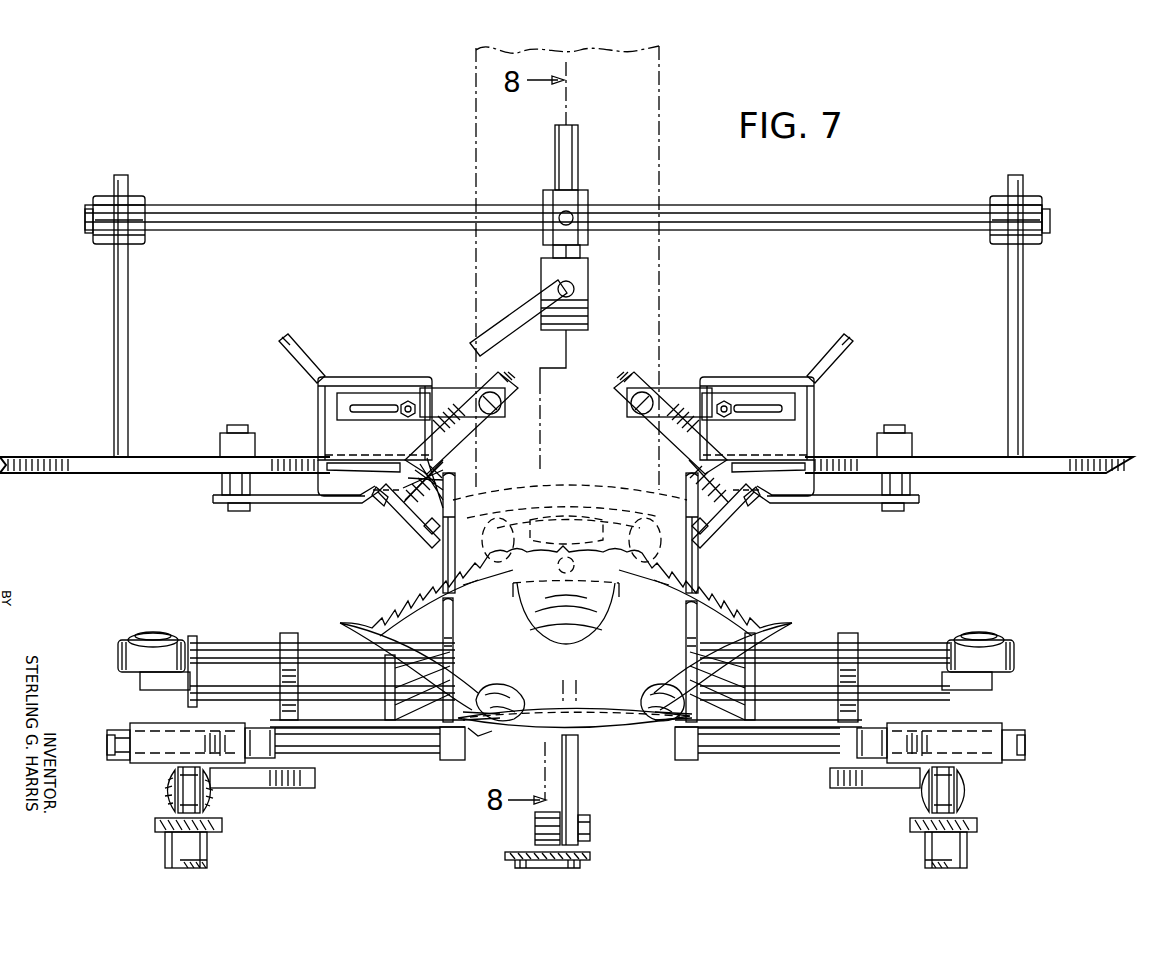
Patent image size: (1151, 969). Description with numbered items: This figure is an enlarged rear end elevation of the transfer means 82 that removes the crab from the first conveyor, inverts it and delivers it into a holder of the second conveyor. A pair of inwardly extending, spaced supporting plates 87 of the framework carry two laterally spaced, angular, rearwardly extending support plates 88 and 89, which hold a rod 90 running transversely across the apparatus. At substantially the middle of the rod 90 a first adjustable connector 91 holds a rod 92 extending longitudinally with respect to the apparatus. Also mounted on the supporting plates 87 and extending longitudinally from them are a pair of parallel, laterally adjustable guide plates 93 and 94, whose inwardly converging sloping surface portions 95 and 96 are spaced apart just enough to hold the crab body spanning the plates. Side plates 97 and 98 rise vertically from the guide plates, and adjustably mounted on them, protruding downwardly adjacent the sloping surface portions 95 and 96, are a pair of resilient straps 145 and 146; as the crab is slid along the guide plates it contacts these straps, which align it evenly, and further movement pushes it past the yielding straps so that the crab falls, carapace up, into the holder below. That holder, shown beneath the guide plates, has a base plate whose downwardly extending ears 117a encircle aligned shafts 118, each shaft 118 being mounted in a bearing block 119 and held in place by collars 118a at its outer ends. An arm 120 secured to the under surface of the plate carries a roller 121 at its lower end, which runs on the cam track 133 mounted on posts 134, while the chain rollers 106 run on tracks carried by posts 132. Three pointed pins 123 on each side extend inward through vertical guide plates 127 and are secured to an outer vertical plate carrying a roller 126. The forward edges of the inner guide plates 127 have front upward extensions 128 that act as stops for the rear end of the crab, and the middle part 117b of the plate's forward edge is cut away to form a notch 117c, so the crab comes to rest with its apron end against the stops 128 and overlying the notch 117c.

The transfer means 82 is at (1048, 351).
The supporting plates 87 is at (145, 462).
The support plate 88 is at (124, 338).
The support plate 89 is at (1010, 360).
The rod 90 is at (848, 214).
The first adjustable connector 91 is at (585, 192).
The rod 92 is at (580, 296).
The guide plate 93 is at (338, 504).
The guide plate 94 is at (782, 504).
The sloping surface portion 95 is at (420, 530).
The sloping surface portion 96 is at (716, 530).
The side plate 97 is at (294, 346).
The side plate 98 is at (838, 346).
The rollers 106 is at (190, 792).
The ears 117a is at (455, 760).
The middle part of the forward edge 117b is at (462, 740).
The notch 117c is at (466, 730).
The shafts 118 is at (344, 756).
The collars 118a is at (116, 730).
The bearing block 119 is at (182, 735).
The arm 120 is at (578, 776).
The roller 121 is at (548, 826).
The pins 123 is at (222, 688).
The roller 126 is at (118, 652).
The vertical guide plates 127 is at (378, 626).
The front upward extensions 128 is at (455, 492).
The posts 132 is at (200, 856).
The cam track 133 is at (592, 856).
The posts 134 is at (514, 864).
The resilient strap 145 is at (480, 432).
The resilient strap 146 is at (652, 432).